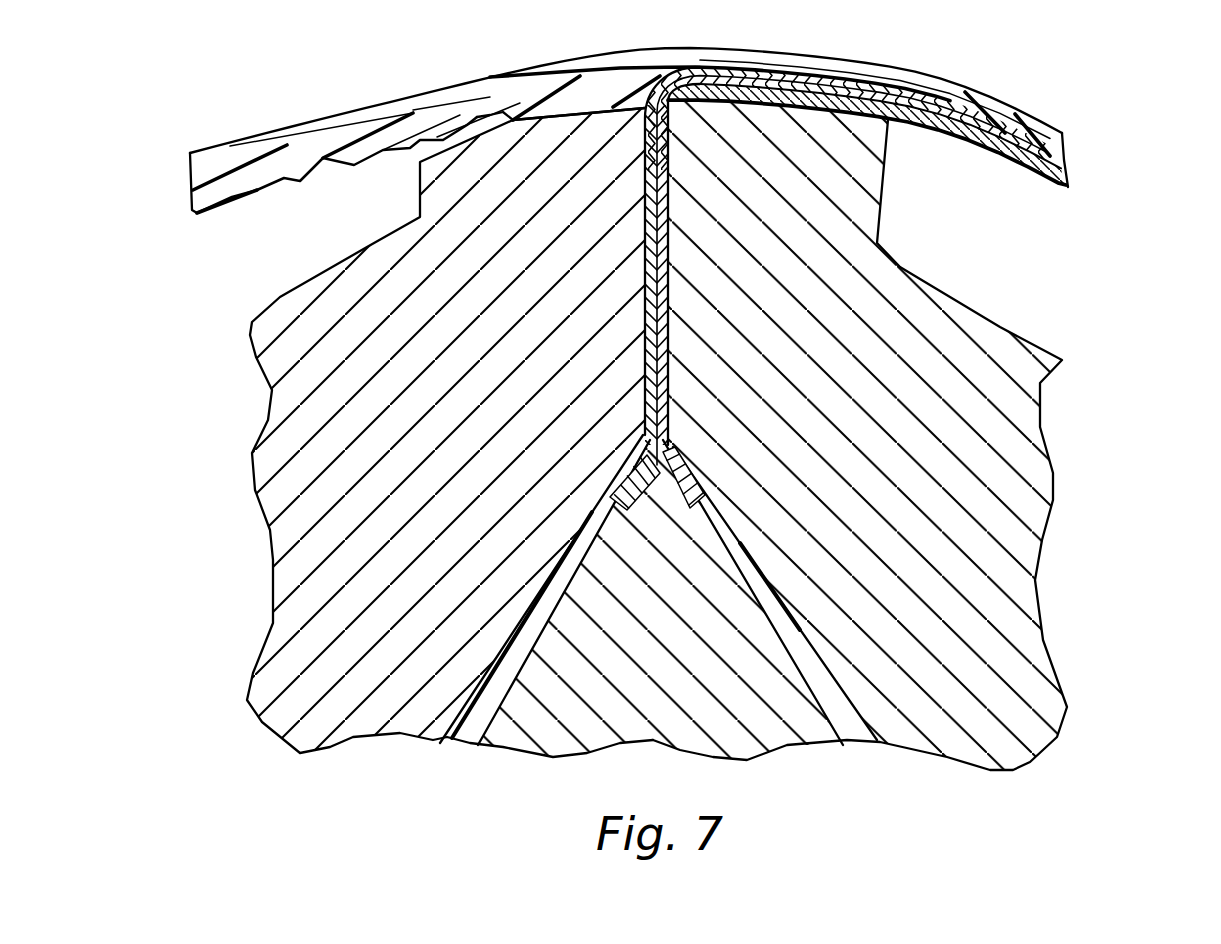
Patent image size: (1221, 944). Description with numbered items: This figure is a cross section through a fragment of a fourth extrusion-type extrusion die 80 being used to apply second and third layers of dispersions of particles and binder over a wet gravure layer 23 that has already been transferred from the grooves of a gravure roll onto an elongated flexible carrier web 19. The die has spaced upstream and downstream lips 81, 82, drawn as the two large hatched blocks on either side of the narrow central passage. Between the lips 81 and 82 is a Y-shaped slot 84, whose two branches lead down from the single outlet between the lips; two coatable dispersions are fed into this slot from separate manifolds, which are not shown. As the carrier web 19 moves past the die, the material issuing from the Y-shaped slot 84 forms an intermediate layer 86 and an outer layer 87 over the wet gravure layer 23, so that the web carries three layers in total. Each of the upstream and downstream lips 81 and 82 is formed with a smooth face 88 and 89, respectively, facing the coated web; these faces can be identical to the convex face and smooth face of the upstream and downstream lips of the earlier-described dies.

The carrier web 19 is at (287, 128).
The wet gravure layer 23 is at (282, 170).
The joint assembly 80 is at (1105, 649).
The upstream lip 81 is at (272, 368).
The downstream lip 82 is at (1030, 383).
The Y-shaped slot 84 is at (483, 710).
The intermediate layer 86 is at (1000, 147).
The outer layer 87 is at (913, 123).
The smooth face 88 is at (488, 130).
The smooth face 89 is at (720, 100).